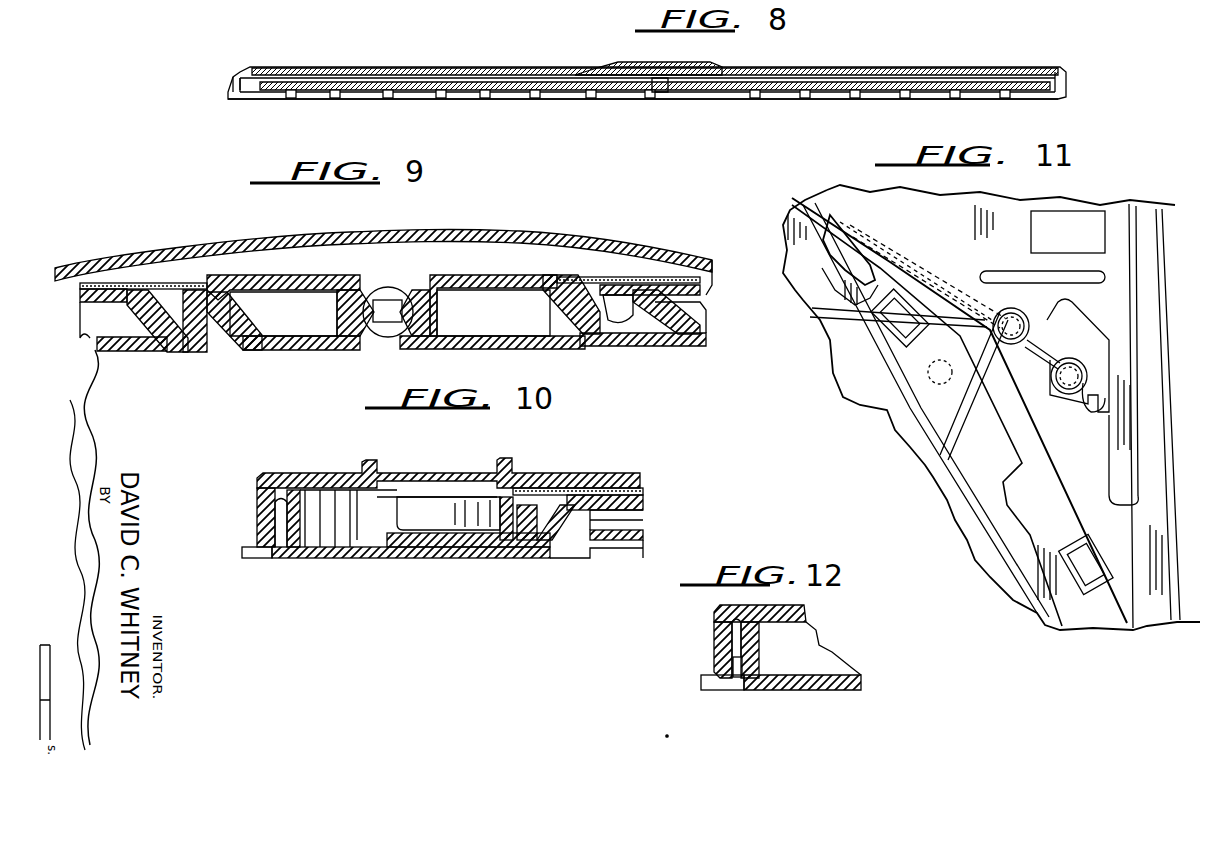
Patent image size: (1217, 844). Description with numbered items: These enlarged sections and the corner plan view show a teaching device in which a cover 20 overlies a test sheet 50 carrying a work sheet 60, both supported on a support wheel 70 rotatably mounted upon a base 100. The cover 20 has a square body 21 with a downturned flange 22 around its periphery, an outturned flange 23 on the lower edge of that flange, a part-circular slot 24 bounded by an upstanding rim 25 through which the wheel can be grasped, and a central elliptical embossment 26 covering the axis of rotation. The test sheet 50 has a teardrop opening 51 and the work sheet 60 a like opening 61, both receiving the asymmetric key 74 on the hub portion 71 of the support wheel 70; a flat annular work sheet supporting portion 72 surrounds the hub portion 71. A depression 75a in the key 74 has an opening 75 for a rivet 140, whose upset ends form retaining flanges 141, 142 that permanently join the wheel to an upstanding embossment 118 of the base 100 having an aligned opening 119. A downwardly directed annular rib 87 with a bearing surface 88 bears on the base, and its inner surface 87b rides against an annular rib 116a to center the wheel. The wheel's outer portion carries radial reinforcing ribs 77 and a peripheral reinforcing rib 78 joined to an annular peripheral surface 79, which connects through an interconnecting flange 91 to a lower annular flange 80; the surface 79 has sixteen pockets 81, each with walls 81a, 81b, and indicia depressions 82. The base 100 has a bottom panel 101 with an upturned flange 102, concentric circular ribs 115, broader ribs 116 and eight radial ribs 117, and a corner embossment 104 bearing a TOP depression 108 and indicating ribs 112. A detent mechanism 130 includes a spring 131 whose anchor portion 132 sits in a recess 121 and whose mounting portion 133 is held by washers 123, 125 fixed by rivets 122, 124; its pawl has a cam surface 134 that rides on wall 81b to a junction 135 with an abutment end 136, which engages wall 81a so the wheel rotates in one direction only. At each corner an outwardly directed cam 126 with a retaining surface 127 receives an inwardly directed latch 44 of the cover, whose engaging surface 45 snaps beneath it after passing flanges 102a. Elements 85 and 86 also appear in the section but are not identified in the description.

In FIG. 8, the cover 20 is at (503, 54).
In FIG. 9, the cover 20 is at (192, 238).
In FIG. 10, the cover 20 is at (270, 461).
In FIG. 12, the cover 20 is at (702, 609).
In FIG. 9, the body 21 is at (70, 265).
In FIG. 10, the body 21 is at (310, 473).
In FIG. 12, the body 21 is at (800, 612).
In FIG. 8, the downturned flange 22 is at (232, 82).
In FIG. 10, the downturned flange 22 is at (257, 512).
In FIG. 12, the downturned flange 22 is at (710, 626).
In FIG. 10, the outturned flange 23 is at (242, 553).
In FIG. 12, the outturned flange 23 is at (705, 685).
In FIG. 10, the part-circular slot 24 is at (498, 458).
In FIG. 10, the upstanding rim 25 is at (368, 462).
In FIG. 8, the elliptical embossment 26 is at (600, 66).
In FIG. 9, the elliptical embossment 26 is at (245, 238).
In FIG. 12, the latch 44 is at (736, 678).
In FIG. 12, the engaging surface 45 is at (730, 655).
In FIG. 8, the test sheet 50 is at (325, 78).
In FIG. 9, the test sheet 50 is at (97, 342).
In FIG. 10, the test sheet 50 is at (651, 491).
In FIG. 9, the opening 51 is at (222, 281).
In FIG. 8, the work sheet 60 is at (447, 74).
In FIG. 9, the work sheet 60 is at (128, 283).
In FIG. 9, the opening 61 is at (210, 283).
In FIG. 8, the support wheel 70 is at (312, 92).
In FIG. 9, the support wheel 70 is at (702, 302).
In FIG. 10, the support wheel 70 is at (645, 500).
In FIG. 11, the support wheel 70 is at (1001, 603).
In FIG. 9, the hub portion 71 is at (170, 284).
In FIG. 10, the hub portion 71 is at (640, 515).
In FIG. 11, the hub portion 71 is at (940, 512).
In FIG. 8, the work sheet supporting portion 72 is at (512, 86).
In FIG. 9, the work sheet supporting portion 72 is at (82, 300).
In FIG. 8, the key 74 is at (625, 68).
In FIG. 9, the key 74 is at (298, 277).
In FIG. 9, the opening 75 is at (405, 300).
In FIG. 9, the depression 75a is at (432, 278).
In FIG. 8, the radially extending reinforcing ribs 77 is at (408, 100).
In FIG. 11, the radially extending reinforcing ribs 77 is at (845, 393).
In FIG. 10, the reinforcing rib 78 is at (590, 560).
In FIG. 11, the reinforcing rib 78 is at (985, 525).
In FIG. 11, the annular peripheral surface 79 is at (1045, 625).
In FIG. 8, the lower annular flange 80 is at (255, 100).
In FIG. 10, the lower annular flange 80 is at (451, 571).
In FIG. 11, the lower annular flange 80 is at (1062, 523).
In FIG. 10, the pockets 81 is at (505, 505).
In FIG. 11, the pockets 81 is at (855, 240).
In FIG. 11, the wall 81a is at (843, 260).
In FIG. 10, the wall 81b is at (445, 497).
In FIG. 11, the wall 81b is at (900, 275).
In FIG. 11, the depressions 82 is at (898, 335).
In FIG. 10, the inclined wall 85 is at (548, 545).
In FIG. 10, the bottom wall 86 is at (410, 547).
In FIG. 8, the reinforcing and bearing rib 87 is at (575, 94).
In FIG. 9, the reinforcing and bearing rib 87 is at (135, 308).
In FIG. 9, the inner surface 87b is at (198, 346).
In FIG. 9, the bearing surface 88 is at (165, 352).
In FIG. 11, the bearing surface 88 is at (885, 240).
In FIG. 8, the interconnecting flange 91 is at (252, 90).
In FIG. 10, the interconnecting flange 91 is at (397, 512).
In FIG. 11, the interconnecting flange 91 is at (806, 206).
In FIG. 8, the base 100 is at (303, 106).
In FIG. 9, the base 100 is at (510, 353).
In FIG. 11, the base 100 is at (1177, 502).
In FIG. 12, the base 100 is at (858, 696).
In FIG. 9, the bottom panel 101 is at (130, 351).
In FIG. 10, the bottom panel 101 is at (335, 558).
In FIG. 11, the bottom panel 101 is at (1157, 630).
In FIG. 12, the bottom panel 101 is at (815, 672).
In FIG. 8, the upturned flange 102 is at (242, 95).
In FIG. 10, the upturned flange 102 is at (290, 547).
In FIG. 11, the upturned flange 102 is at (1172, 555).
In FIG. 12, the upturned flange 102 is at (752, 638).
In FIG. 10, the flange 102a is at (282, 497).
In FIG. 12, the flange 102a is at (732, 625).
In FIG. 11, the embossment 104 is at (1120, 218).
In FIG. 11, the depression 108 is at (1090, 215).
In FIG. 11, the indicating ribs 112 is at (1025, 275).
In FIG. 8, the circular reinforcing ribs 115 is at (445, 96).
In FIG. 10, the circular reinforcing ribs 115 is at (608, 545).
In FIG. 8, the reinforcing ribs 116 is at (540, 92).
In FIG. 8, the annular upstanding reinforcing rib 116a is at (620, 95).
In FIG. 9, the annular upstanding reinforcing rib 116a is at (222, 350).
In FIG. 10, the radially extending reinforcing ribs 117 is at (645, 540).
In FIG. 9, the embossment 118 is at (355, 338).
In FIG. 9, the opening 119 is at (407, 325).
In FIG. 11, the recess 121 is at (1085, 325).
In FIG. 11, the first rivet 122 is at (1020, 316).
In FIG. 11, the retaining washer 123 is at (1000, 313).
In FIG. 11, the second rivet 124 is at (1052, 372).
In FIG. 11, the second retaining washer 125 is at (1076, 362).
In FIG. 12, the cam 126 is at (728, 650).
In FIG. 12, the retaining surface 127 is at (745, 668).
In FIG. 11, the detent mechanism 130 is at (1030, 470).
In FIG. 11, the spring 131 is at (980, 370).
In FIG. 11, the anchor portion 132 is at (1088, 408).
In FIG. 11, the mounting portion 133 is at (1048, 356).
In FIG. 11, the cam surface 134 is at (878, 300).
In FIG. 11, the junction 135 is at (905, 245).
In FIG. 11, the abutment end 136 is at (815, 282).
In FIG. 8, the rivet 140 is at (652, 90).
In FIG. 9, the rivet 140 is at (376, 305).
In FIG. 8, the retaining flange 141 is at (660, 70).
In FIG. 9, the retaining flange 141 is at (382, 283).
In FIG. 8, the retaining flange 142 is at (648, 96).
In FIG. 9, the retaining flange 142 is at (388, 337).